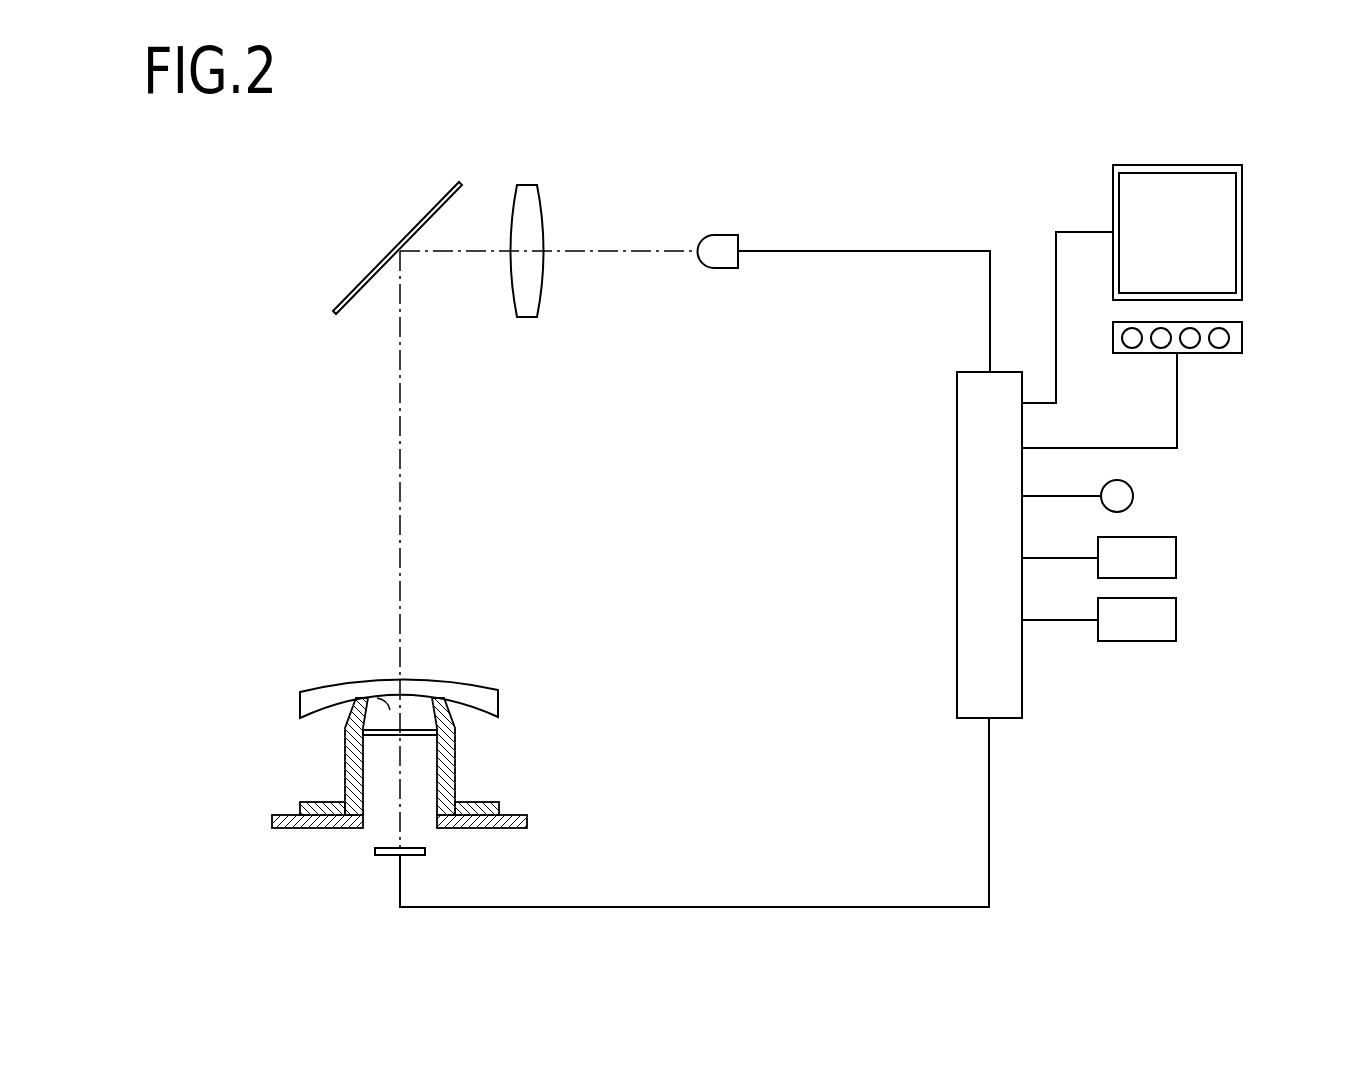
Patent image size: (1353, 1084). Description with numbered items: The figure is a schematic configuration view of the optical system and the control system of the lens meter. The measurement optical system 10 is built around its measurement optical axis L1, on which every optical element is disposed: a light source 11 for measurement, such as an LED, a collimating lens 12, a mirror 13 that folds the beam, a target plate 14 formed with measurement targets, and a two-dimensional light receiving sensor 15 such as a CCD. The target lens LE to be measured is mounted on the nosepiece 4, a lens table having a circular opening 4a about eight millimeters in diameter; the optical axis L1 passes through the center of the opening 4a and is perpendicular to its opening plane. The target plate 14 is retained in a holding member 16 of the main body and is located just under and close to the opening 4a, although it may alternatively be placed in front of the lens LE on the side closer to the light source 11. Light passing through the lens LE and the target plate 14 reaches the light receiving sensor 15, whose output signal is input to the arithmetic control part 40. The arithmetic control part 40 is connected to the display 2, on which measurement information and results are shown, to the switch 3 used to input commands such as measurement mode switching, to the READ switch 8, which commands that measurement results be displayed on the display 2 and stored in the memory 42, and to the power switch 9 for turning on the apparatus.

The measurement optical system 10 is at (618, 193).
The light source 11 is at (722, 247).
The collimating lens 12 is at (531, 187).
The mirror 13 is at (438, 198).
The measurement optical axis L1 is at (400, 519).
The target lens LE is at (462, 680).
The nosepiece 4 is at (457, 747).
The opening 4a is at (382, 712).
The target plate 14 is at (420, 738).
The holding member 16 is at (363, 810).
The two-dimensional light receiving sensor 15 is at (380, 856).
The arithmetic control part 40 is at (957, 432).
The display 2 is at (1242, 222).
The switch 3 is at (1242, 337).
The READ switch 8 is at (1133, 496).
The memory 42 is at (1176, 558).
The power switch 9 is at (1176, 620).